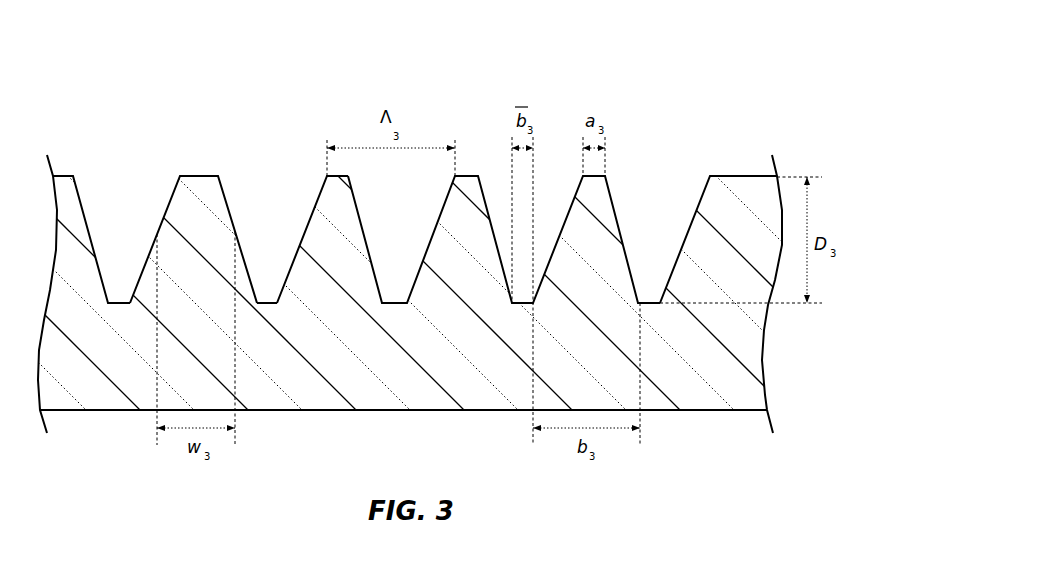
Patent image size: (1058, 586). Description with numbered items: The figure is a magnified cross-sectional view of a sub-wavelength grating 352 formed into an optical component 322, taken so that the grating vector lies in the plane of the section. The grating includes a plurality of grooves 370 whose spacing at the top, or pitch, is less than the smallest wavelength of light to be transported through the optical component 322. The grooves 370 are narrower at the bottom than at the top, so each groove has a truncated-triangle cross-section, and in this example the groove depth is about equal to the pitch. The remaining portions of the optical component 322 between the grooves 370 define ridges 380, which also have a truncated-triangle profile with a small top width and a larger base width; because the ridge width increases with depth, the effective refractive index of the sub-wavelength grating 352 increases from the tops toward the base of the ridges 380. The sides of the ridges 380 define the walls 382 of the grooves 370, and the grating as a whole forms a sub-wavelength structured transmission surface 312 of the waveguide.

The sub-wavelength grating 352 is at (687, 56).
The grooves 370 is at (259, 203).
The ridges 380 is at (197, 165).
The walls 382 is at (318, 196).
The sub-wavelength structured transmission surface 312 is at (682, 225).
The optical component 322 is at (765, 357).